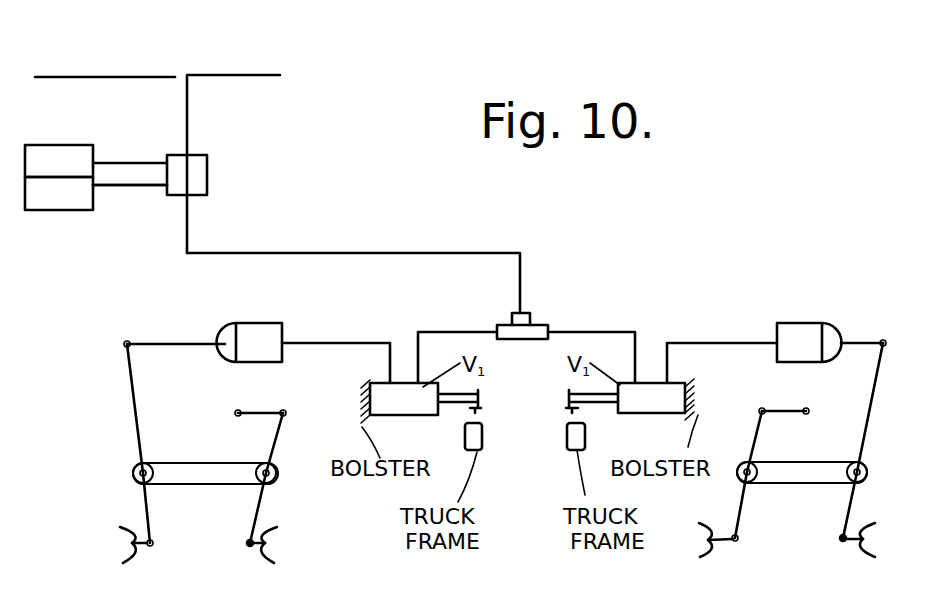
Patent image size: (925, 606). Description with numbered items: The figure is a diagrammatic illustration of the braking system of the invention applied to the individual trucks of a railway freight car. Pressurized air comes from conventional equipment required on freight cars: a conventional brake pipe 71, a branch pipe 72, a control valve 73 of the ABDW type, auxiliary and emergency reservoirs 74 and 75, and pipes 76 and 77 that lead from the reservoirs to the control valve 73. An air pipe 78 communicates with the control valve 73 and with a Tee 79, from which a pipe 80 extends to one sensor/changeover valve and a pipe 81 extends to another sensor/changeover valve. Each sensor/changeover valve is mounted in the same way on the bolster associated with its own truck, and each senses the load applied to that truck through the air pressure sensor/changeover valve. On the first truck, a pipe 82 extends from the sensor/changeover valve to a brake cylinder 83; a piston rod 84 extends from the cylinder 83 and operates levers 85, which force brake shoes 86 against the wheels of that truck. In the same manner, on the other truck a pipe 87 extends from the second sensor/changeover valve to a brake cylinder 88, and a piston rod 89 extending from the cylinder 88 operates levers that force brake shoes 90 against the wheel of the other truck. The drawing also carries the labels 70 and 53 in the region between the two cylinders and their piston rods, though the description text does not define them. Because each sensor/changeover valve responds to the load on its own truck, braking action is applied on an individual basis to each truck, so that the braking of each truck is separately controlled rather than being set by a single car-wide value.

The piston rod end bracket 53 is at (568, 408).
The brake cylinder 70 is at (567, 392).
The brake pipe 71 is at (117, 76).
The branch pipe 72 is at (187, 120).
The control valve 73 is at (207, 196).
The auxiliary reservoir 74 is at (91, 145).
The emergency reservoir 75 is at (92, 213).
The pipe 76 is at (142, 163).
The pipe 77 is at (127, 188).
The air pipe 78 is at (413, 250).
The Tee 79 is at (532, 325).
The pipe 80 is at (460, 330).
The pipe 81 is at (620, 330).
The pipe 82 is at (350, 342).
The brake cylinder 83 is at (277, 327).
The piston rod 84 is at (184, 342).
The levers 85 is at (126, 425).
The brake shoes 86 is at (131, 566).
The pipe 87 is at (723, 342).
The brake cylinder 88 is at (805, 325).
The piston rod 89 is at (856, 340).
The brake shoes 90 is at (701, 558).